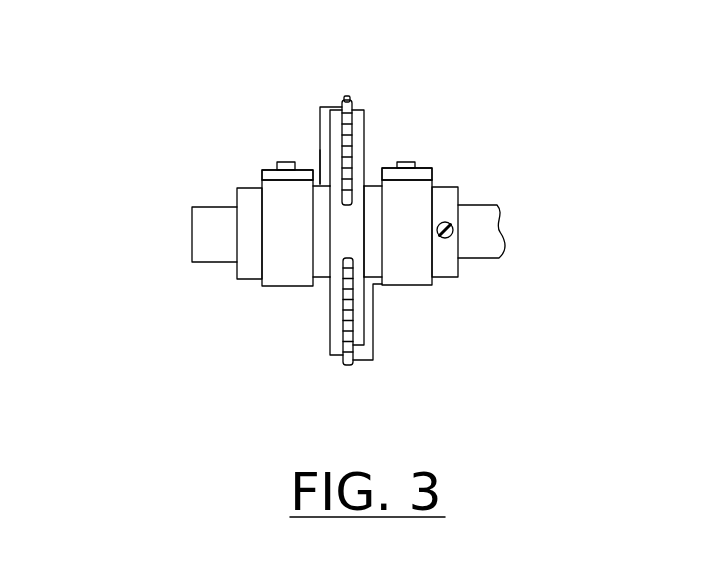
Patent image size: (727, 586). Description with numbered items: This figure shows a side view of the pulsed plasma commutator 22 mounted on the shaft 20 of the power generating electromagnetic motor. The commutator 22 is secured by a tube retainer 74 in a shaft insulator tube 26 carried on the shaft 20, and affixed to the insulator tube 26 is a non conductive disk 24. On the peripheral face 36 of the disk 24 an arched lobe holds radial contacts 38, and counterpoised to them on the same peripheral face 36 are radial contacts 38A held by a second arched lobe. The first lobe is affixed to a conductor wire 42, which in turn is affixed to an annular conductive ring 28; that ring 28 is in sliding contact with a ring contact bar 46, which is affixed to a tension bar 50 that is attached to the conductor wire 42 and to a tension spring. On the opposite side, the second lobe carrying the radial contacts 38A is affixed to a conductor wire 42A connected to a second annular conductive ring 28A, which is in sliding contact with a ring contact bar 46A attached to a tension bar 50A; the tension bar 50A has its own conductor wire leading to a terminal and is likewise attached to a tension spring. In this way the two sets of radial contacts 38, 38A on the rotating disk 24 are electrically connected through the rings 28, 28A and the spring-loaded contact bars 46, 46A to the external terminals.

The shaft 20 is at (213, 223).
The pulsed plasma commutator 22 is at (316, 368).
The non conductive disk 24 is at (331, 318).
The shaft insulator tube 26 is at (245, 265).
The annular conductive ring 28 is at (300, 272).
The annular conductive ring 28A is at (407, 270).
The peripheral face 36 is at (345, 233).
The radial contacts 38 is at (346, 97).
The radial contacts 38A is at (348, 366).
The conductor wire 42 is at (321, 107).
The conductor wire 42A is at (374, 327).
The ring contact bar 46 is at (262, 174).
The ring contact bar 46A is at (430, 172).
The tension bar 50 is at (284, 162).
The tension bar 50A is at (410, 162).
The tube retainer 74 is at (450, 226).